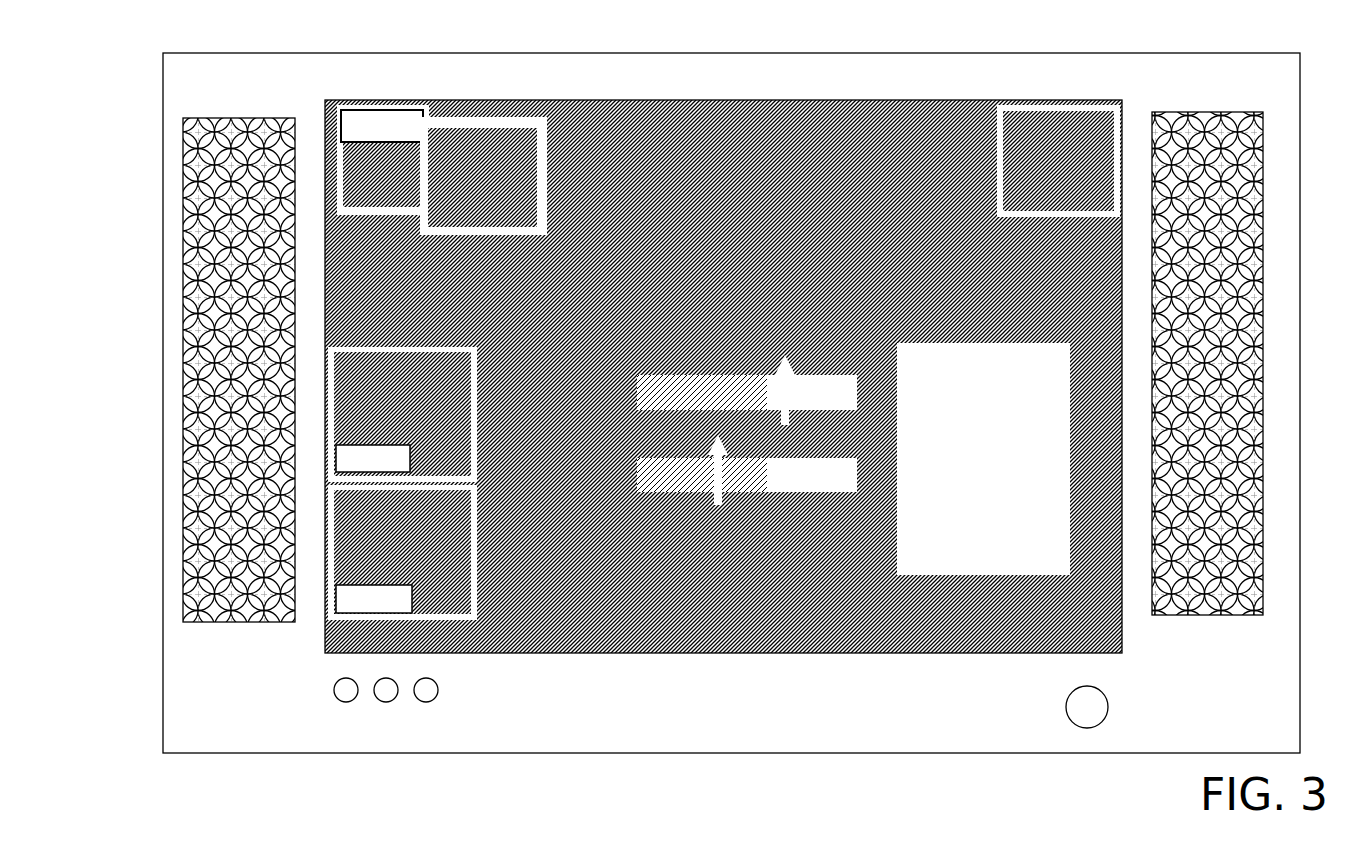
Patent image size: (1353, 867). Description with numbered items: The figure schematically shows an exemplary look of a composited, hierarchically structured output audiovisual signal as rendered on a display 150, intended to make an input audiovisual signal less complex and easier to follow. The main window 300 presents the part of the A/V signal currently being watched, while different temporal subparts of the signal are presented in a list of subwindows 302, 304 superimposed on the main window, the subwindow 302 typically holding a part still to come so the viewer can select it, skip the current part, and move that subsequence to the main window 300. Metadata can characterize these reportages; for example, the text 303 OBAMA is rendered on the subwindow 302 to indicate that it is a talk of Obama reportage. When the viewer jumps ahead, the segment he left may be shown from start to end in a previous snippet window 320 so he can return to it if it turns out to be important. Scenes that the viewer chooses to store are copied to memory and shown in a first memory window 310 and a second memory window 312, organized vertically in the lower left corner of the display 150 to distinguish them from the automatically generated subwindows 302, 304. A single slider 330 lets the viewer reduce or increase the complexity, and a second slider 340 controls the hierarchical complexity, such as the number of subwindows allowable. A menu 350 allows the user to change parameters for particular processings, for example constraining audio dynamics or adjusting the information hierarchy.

The display 150 is at (369, 754).
The main window 300 is at (908, 100).
The subwindow 302 is at (422, 100).
The text 303 is at (362, 112).
The subwindow 304 is at (506, 125).
The previous snippet window 320 is at (1080, 105).
The first memory window 310 is at (327, 437).
The second memory window 312 is at (327, 550).
The slider 330 is at (828, 395).
The second slider 340 is at (762, 478).
The menu 350 is at (960, 530).